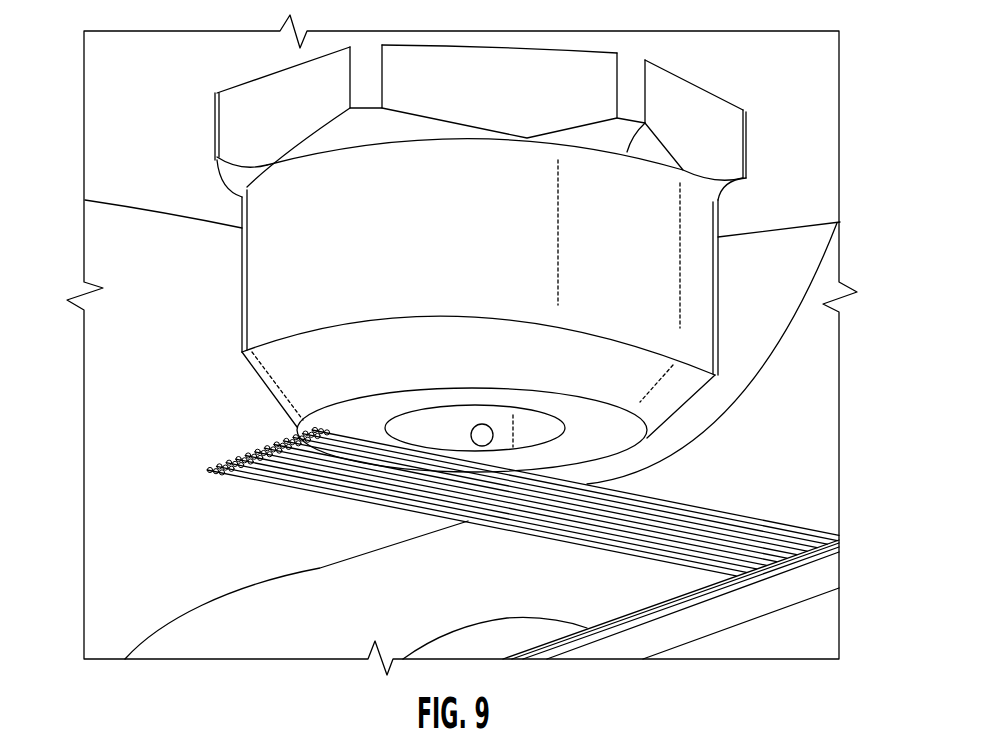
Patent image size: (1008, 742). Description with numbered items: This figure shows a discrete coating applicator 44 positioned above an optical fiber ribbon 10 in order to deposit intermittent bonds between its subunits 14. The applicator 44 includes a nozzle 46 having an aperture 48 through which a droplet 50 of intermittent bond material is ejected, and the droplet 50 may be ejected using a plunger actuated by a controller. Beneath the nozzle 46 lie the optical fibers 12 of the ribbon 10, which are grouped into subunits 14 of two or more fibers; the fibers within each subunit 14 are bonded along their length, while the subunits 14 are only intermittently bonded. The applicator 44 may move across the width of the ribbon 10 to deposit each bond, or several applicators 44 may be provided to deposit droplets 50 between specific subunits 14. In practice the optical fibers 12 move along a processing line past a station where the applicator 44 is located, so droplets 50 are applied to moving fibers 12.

The optical fiber ribbon 10 is at (346, 520).
The optical fibers 12 is at (250, 450).
The subunits 14 is at (805, 517).
The discrete coating applicator 44 is at (158, 159).
The nozzle 46 is at (537, 388).
The aperture 48 is at (556, 441).
The droplet 50 is at (472, 431).